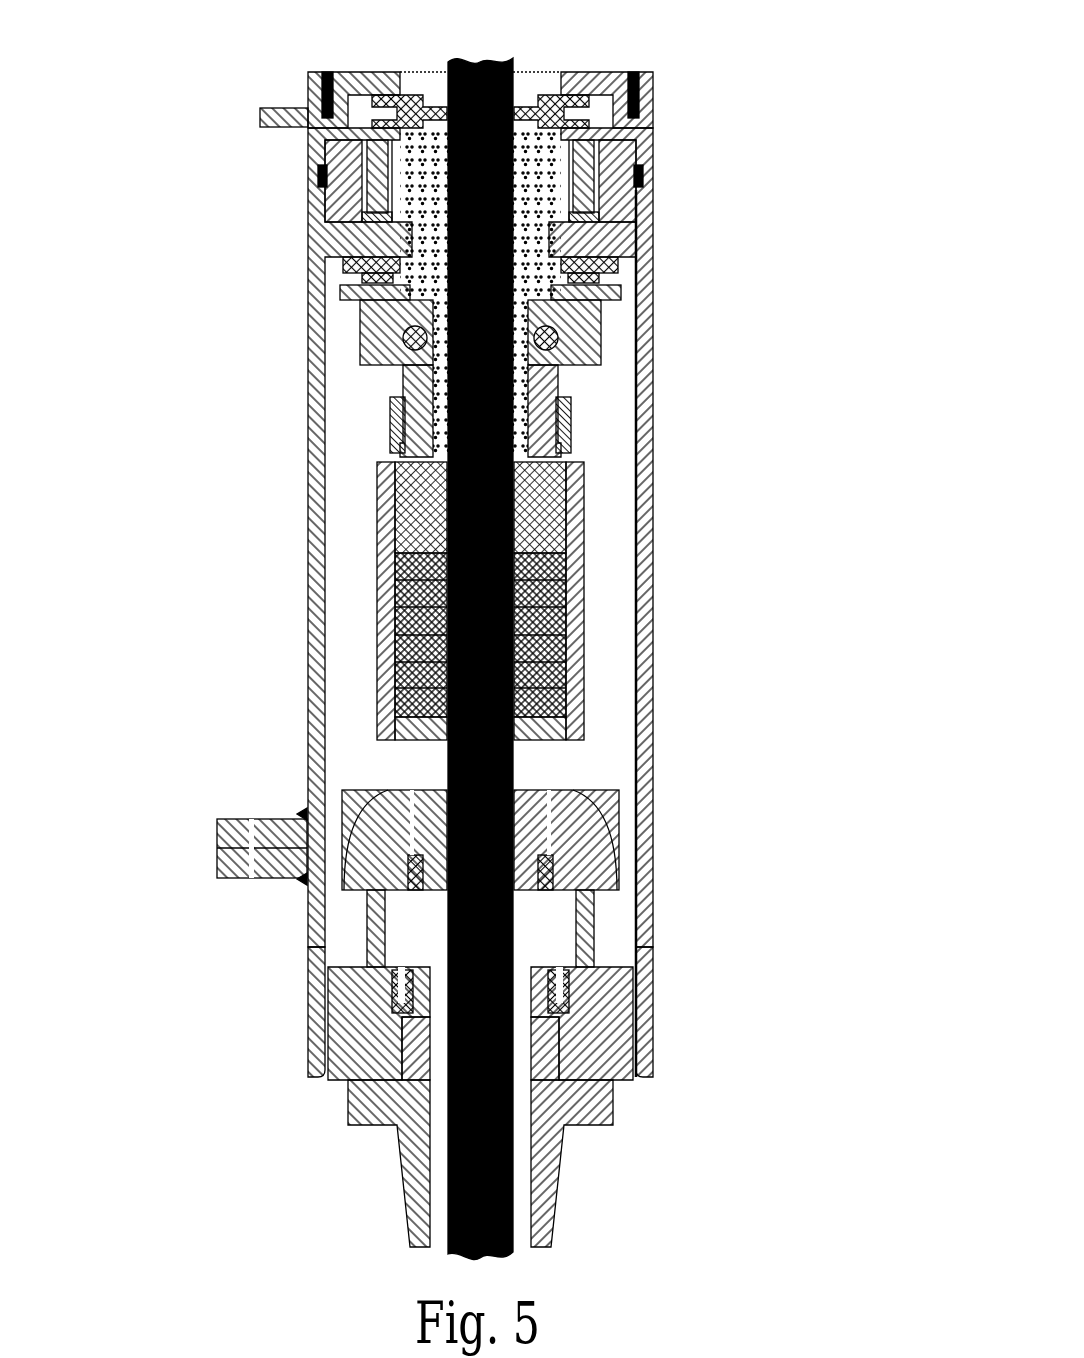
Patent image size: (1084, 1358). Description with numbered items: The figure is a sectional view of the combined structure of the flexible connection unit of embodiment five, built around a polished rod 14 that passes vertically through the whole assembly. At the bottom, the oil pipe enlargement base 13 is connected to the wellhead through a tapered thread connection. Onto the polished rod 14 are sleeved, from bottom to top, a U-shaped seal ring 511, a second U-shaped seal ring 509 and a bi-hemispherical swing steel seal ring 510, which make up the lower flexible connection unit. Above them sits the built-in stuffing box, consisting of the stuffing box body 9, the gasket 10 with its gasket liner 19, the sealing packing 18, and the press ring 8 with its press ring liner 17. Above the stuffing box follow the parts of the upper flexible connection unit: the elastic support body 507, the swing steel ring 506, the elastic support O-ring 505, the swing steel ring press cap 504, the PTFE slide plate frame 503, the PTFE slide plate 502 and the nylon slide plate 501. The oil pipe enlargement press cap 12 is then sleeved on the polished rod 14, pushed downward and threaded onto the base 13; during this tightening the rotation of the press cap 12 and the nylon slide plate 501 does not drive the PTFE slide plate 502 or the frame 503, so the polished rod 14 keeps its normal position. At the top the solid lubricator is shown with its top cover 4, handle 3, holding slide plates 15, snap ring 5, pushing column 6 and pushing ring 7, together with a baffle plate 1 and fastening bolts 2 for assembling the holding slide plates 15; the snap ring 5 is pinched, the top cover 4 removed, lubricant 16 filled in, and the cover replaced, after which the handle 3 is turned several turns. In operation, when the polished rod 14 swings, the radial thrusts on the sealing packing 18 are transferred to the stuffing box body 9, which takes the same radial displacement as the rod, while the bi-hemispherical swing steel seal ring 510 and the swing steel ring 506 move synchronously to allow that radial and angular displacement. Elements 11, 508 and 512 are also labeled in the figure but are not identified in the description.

The baffle plate 1 is at (306, 79).
The fastening bolts 2 is at (320, 96).
The handle 3 is at (272, 128).
The top cover 4 is at (306, 168).
The snap ring 5 is at (323, 190).
The pushing column 6 is at (364, 212).
The pushing ring 7 is at (389, 220).
The press ring 8 is at (389, 428).
The stuffing box body 9 is at (375, 596).
The gasket 10 is at (394, 722).
The mounting flange 11 is at (256, 817).
The oil pipe enlargement press cap 12 is at (309, 990).
The oil pipe enlargement base 13 is at (346, 1093).
The polished rod 14 is at (445, 1243).
The holding slide plates 15 is at (577, 101).
The lubricant 16 is at (595, 168).
The nylon slide plate 501 is at (622, 253).
The PTFE slide plate 502 is at (605, 270).
The PTFE slide plate frame 503 is at (628, 288).
The swing steel ring press cap 504 is at (614, 318).
The elastic support O-ring 505 is at (561, 343).
The swing steel ring 506 is at (555, 390).
The elastic support body 507 is at (568, 486).
The press ring liner 17 is at (542, 535).
The sealing packing 18 is at (552, 639).
The gasket liner 19 is at (537, 725).
The clamp block 508 is at (606, 836).
The U-shaped seal ring 509 is at (563, 866).
The bi-hemispherical swing steel seal ring 510 is at (609, 936).
The U-shaped seal ring 511 is at (568, 992).
The inner sleeve 512 is at (609, 1038).